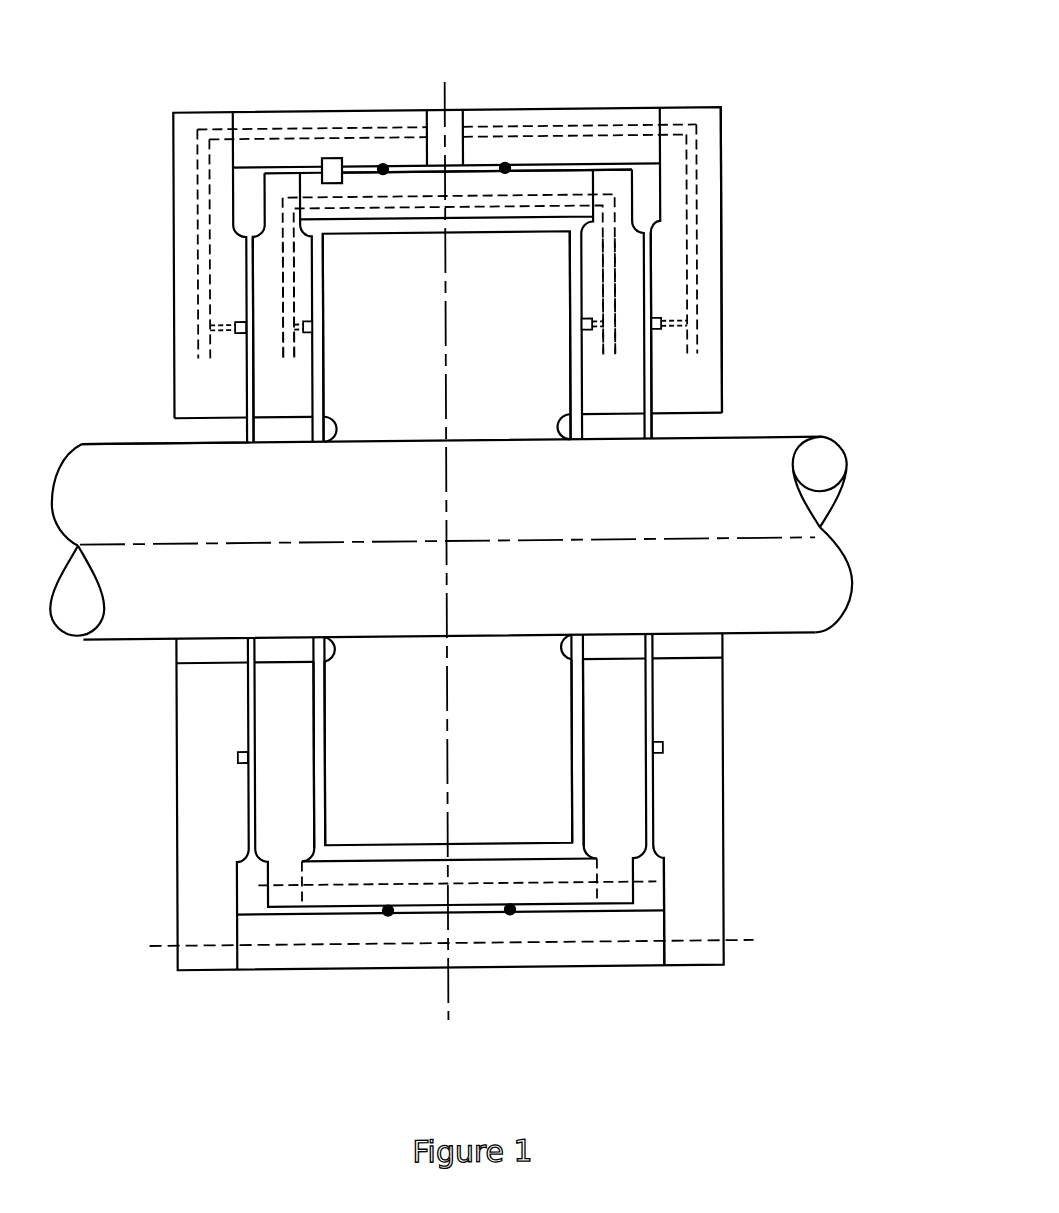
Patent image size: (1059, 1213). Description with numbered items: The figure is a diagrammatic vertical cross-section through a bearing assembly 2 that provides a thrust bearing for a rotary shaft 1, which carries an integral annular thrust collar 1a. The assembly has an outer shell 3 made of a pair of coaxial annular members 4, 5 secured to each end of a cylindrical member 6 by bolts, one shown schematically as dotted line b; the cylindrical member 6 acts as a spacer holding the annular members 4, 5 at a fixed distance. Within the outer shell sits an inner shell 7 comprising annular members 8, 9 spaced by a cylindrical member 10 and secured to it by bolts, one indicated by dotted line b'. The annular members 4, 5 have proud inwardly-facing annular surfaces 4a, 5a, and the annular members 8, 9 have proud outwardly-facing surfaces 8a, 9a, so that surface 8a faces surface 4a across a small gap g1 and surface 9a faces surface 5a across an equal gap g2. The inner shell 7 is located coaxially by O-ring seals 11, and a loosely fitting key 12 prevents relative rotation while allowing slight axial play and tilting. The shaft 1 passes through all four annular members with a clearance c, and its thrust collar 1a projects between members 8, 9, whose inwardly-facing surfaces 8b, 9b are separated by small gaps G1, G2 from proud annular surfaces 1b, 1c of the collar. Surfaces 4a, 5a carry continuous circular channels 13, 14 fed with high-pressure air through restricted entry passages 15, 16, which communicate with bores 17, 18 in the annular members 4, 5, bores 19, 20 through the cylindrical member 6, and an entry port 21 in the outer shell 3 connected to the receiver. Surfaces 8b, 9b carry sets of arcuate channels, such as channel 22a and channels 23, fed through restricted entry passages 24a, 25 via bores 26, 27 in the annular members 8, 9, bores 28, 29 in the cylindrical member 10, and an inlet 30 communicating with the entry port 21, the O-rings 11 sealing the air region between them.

The rotary shaft 1 is at (825, 441).
The thrust collar 1a is at (495, 759).
The annular surface of collar 1b is at (327, 789).
The annular surface of collar 1c is at (572, 748).
The bearing assembly 2 is at (722, 180).
The outer shell 3 is at (175, 355).
The annular member 4 is at (187, 402).
The inwardly-facing annular surface 4a is at (248, 676).
The annular member 5 is at (708, 373).
The inwardly-facing annular surface 5a is at (652, 684).
The cylindrical member 6 is at (625, 955).
The inner shell 7 is at (267, 860).
The annular member 8 is at (300, 738).
The outwardly-facing annular surface 8a is at (255, 780).
The inwardly-facing annular surface 8b is at (313, 677).
The annular member 9 is at (597, 732).
The outwardly-facing annular surface 9a is at (645, 780).
The inwardly-facing annular surface 9b is at (583, 673).
The cylindrical member 10 is at (522, 871).
The O-ring seals 11 is at (385, 163).
The key 12 is at (335, 154).
The circular channel 13 is at (240, 331).
The circular channel 14 is at (655, 318).
The entry passages 15 is at (217, 321).
The entry passages 16 is at (665, 330).
The bore 17 is at (197, 190).
The bore 18 is at (697, 248).
The bore 19 is at (310, 126).
The bore 20 is at (640, 125).
The entry port 21 is at (452, 110).
The arcuate channel 22a is at (300, 330).
The arcuate channels 23 is at (593, 328).
The entry passage 24a is at (295, 320).
The entry passages 25 is at (598, 328).
The bore 26 is at (293, 246).
The bore 27 is at (602, 244).
The bore 28 is at (385, 207).
The bore 29 is at (468, 208).
The inlet 30 is at (465, 182).
The gap G1 is at (325, 402).
The gap G2 is at (568, 403).
The gap g1 is at (253, 348).
The gap g2 is at (652, 370).
The bolt b is at (463, 934).
The bolt b' is at (688, 911).
The clearance c is at (187, 429).